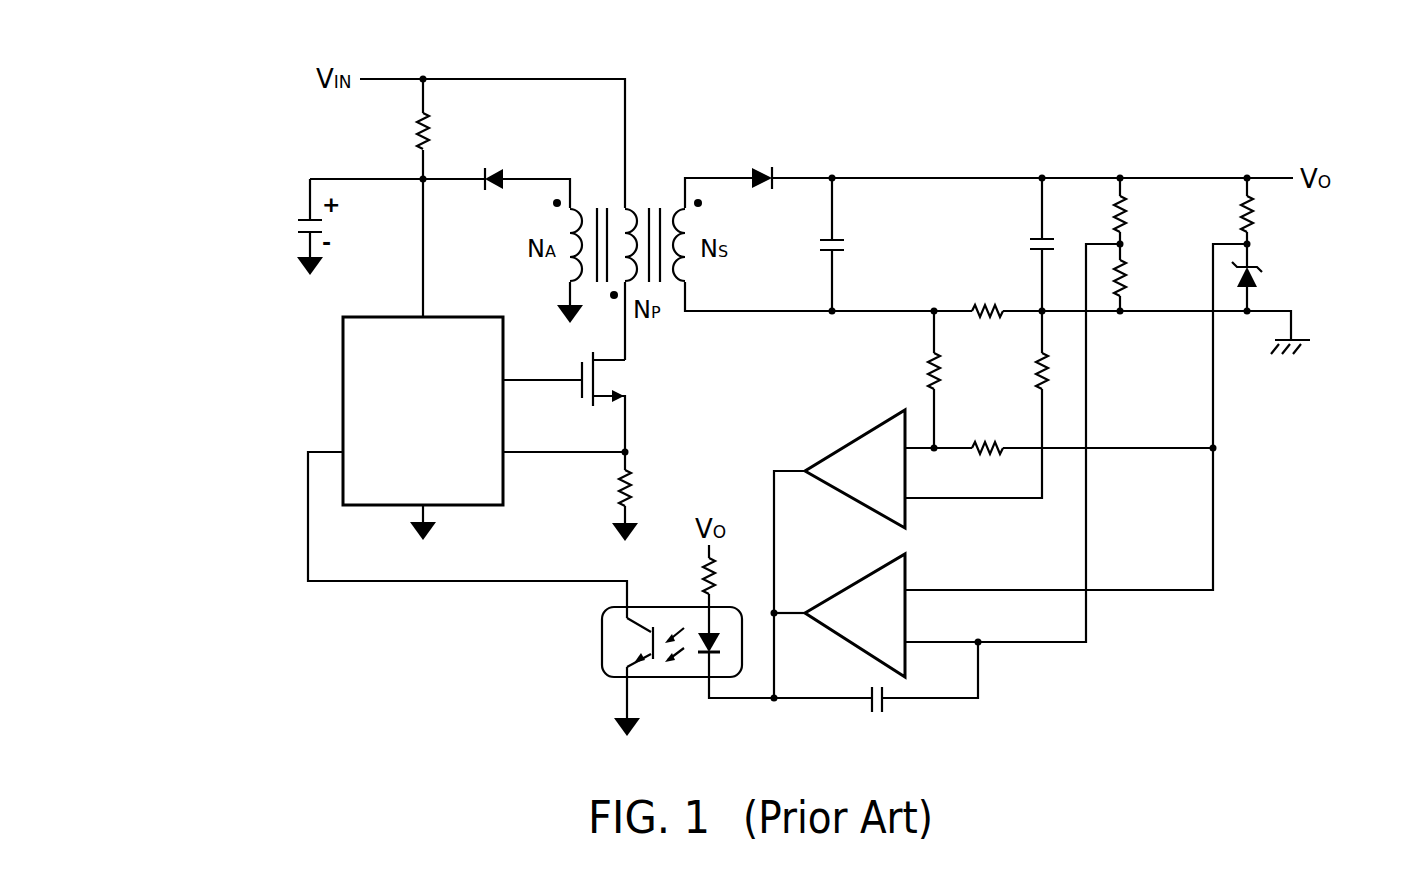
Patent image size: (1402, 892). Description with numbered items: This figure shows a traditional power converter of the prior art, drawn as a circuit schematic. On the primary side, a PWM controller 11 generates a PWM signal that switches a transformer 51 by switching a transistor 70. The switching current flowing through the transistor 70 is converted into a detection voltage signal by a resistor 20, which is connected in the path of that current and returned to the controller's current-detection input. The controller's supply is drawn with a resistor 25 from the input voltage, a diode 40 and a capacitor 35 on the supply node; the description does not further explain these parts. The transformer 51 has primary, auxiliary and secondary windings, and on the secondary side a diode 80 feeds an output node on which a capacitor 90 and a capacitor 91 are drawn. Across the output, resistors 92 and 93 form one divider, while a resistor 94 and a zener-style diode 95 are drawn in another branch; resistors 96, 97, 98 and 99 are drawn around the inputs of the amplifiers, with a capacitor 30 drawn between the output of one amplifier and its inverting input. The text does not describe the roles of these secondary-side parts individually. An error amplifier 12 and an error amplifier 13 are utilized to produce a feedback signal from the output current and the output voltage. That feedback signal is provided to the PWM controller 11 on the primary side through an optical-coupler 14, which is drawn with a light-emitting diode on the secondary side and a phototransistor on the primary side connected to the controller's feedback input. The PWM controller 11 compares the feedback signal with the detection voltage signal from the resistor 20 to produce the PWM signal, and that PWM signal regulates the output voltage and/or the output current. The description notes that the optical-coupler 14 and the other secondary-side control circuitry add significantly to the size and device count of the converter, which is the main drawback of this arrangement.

The PWM controller 11 is at (340, 358).
The error amplifier 12 is at (841, 446).
The error amplifier 13 is at (832, 594).
The optical-coupler 14 is at (597, 663).
The resistor 20 is at (610, 501).
The startup resistor 25 is at (410, 133).
The compensation capacitor 30 is at (878, 718).
The supply capacitor 35 is at (292, 228).
The diode 40 is at (493, 168).
The transformer 51 is at (641, 190).
The transistor 70 is at (628, 376).
The rectifier diode 80 is at (762, 166).
The output capacitor 90 is at (852, 244).
The capacitor 91 is at (1027, 246).
The resistor 92 is at (1138, 214).
The resistor 93 is at (1138, 278).
The resistor 94 is at (1264, 214).
The zener diode 95 is at (1262, 278).
The resistor 96 is at (920, 372).
The resistor 97 is at (982, 304).
The resistor 98 is at (977, 440).
The resistor 99 is at (1056, 372).